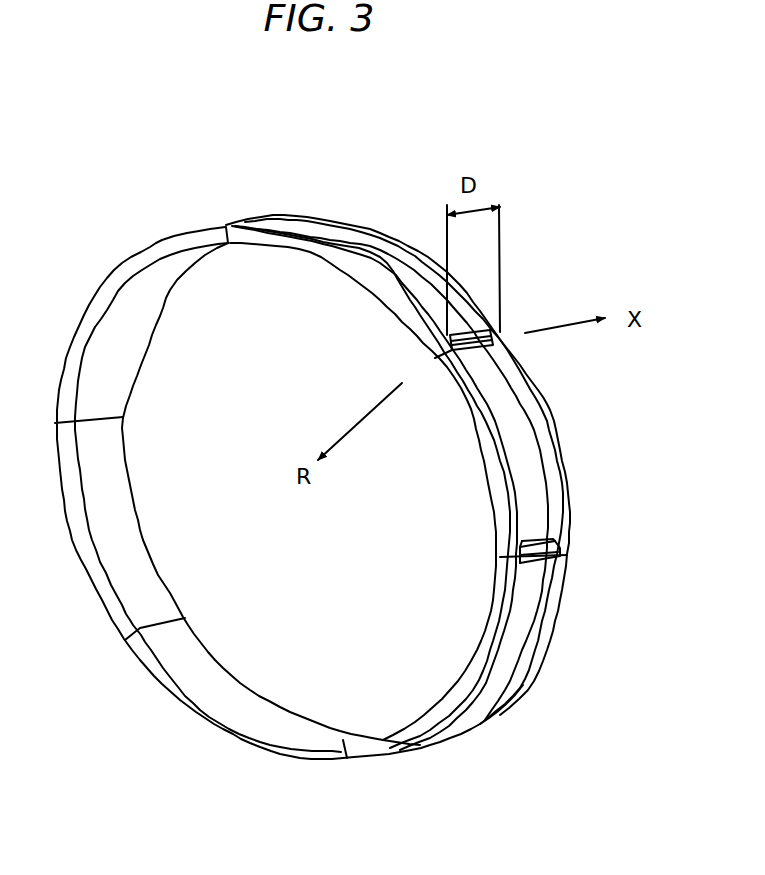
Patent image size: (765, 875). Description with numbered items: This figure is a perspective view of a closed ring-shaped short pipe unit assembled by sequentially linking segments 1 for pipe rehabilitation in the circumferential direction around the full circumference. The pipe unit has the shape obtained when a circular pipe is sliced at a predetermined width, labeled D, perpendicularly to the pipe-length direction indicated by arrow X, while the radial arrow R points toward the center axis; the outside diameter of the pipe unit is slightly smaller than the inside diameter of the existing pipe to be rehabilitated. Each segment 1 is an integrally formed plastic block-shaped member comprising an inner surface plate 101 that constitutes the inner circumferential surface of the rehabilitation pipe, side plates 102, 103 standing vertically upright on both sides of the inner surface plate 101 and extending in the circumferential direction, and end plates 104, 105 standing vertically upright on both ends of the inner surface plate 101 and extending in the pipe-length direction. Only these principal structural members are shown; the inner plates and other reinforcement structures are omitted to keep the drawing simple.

The segment 1 is at (72, 352).
The inner surface plate 101 is at (105, 370).
The side plate 102 is at (497, 507).
The side plate 103 is at (543, 411).
The end plate 104 is at (472, 352).
The end plate 105 is at (543, 545).